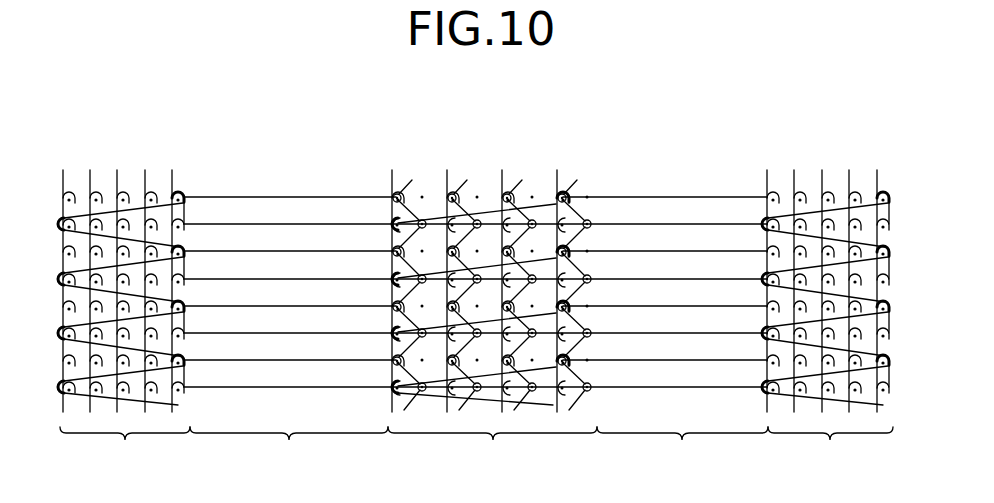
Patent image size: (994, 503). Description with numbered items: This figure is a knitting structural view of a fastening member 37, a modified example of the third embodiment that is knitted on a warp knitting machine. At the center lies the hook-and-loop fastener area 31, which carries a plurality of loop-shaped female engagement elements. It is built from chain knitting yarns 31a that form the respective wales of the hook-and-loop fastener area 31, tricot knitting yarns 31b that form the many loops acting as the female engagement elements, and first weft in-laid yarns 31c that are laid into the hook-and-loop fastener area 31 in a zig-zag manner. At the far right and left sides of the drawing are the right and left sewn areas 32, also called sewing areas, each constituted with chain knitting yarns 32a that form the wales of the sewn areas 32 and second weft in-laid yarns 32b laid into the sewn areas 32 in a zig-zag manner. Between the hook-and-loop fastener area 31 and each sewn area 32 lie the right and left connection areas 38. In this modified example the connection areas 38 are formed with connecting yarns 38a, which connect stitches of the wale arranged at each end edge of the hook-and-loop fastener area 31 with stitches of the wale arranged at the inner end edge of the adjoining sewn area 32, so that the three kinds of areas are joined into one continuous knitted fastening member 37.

The fastening member 37 is at (143, 105).
The sewn areas 32 is at (475, 295).
The chain knitting yarns 32a is at (179, 192).
The second weft in-laid yarns 32b is at (108, 212).
The connection areas 38 is at (476, 295).
The connecting yarns 38a is at (302, 196).
The hook-and-loop fastener area 31 is at (469, 283).
The chain knitting yarns 31a is at (389, 192).
The tricot knitting yarns 31b is at (421, 195).
The first weft in-laid yarns 31c is at (491, 205).